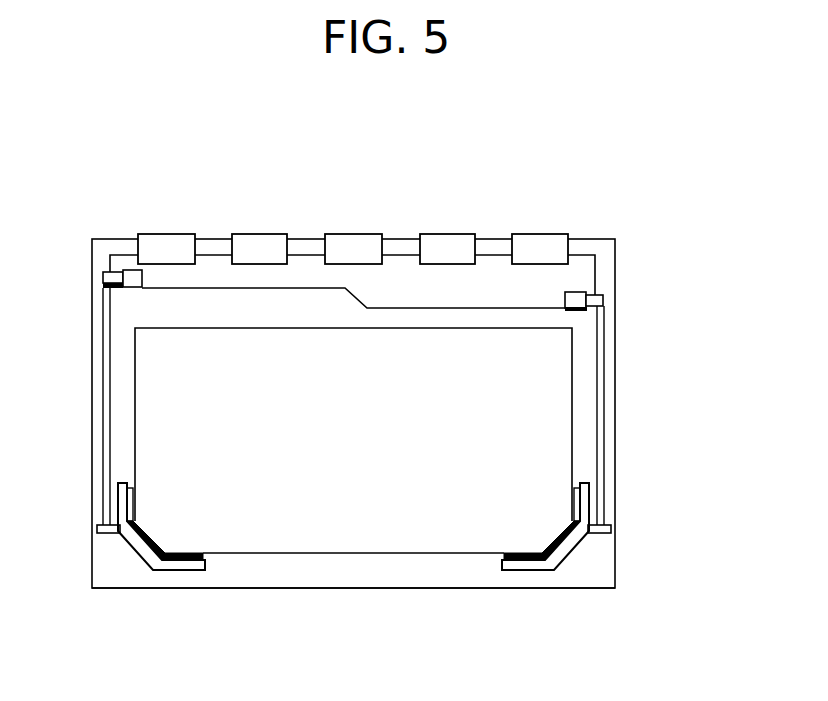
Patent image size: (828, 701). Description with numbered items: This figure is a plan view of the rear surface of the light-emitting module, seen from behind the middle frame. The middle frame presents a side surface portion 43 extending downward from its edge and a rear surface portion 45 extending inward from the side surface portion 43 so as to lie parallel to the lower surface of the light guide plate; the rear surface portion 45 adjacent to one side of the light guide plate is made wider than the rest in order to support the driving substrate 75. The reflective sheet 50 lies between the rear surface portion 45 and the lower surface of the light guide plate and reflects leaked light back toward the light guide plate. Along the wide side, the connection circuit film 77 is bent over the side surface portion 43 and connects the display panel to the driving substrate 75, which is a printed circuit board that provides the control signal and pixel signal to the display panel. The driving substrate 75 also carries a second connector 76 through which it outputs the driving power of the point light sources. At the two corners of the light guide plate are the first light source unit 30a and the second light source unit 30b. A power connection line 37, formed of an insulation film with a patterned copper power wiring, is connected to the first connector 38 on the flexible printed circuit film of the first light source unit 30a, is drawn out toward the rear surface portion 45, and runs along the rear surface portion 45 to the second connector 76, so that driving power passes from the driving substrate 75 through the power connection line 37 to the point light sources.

The first light source unit 30a is at (131, 549).
The second light source unit 30b is at (576, 549).
The power connection line 37 is at (597, 340).
The first connector 38 is at (612, 530).
The side surface portion 43 is at (615, 565).
The rear surface portion 45 is at (261, 309).
The reflective sheet 50 is at (557, 404).
The driving substrate 75 is at (486, 272).
The second connector 76 is at (571, 294).
The connection circuit film 77 is at (537, 242).